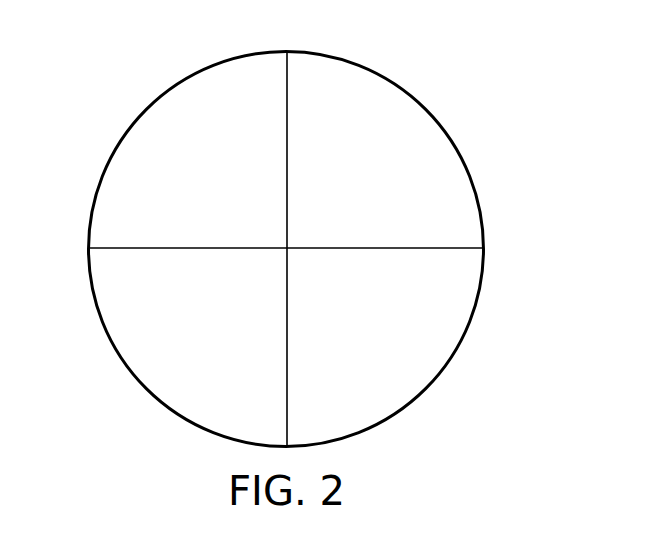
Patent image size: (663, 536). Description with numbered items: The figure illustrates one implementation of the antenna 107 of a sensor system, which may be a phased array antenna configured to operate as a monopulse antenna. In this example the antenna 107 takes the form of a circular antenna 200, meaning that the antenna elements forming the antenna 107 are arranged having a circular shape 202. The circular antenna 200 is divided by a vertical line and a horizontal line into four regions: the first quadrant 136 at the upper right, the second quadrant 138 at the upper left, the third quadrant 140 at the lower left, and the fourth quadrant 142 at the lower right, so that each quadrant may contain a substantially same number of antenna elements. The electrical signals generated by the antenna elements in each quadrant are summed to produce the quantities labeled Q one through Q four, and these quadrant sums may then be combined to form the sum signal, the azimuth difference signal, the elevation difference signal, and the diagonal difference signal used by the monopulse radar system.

The circular antenna 200 is at (314, 227).
The antenna 107 is at (314, 242).
The circular shape 202 is at (158, 97).
The first quadrant 136 is at (390, 205).
The second quadrant 138 is at (228, 205).
The third quadrant 140 is at (228, 367).
The fourth quadrant 142 is at (390, 367).